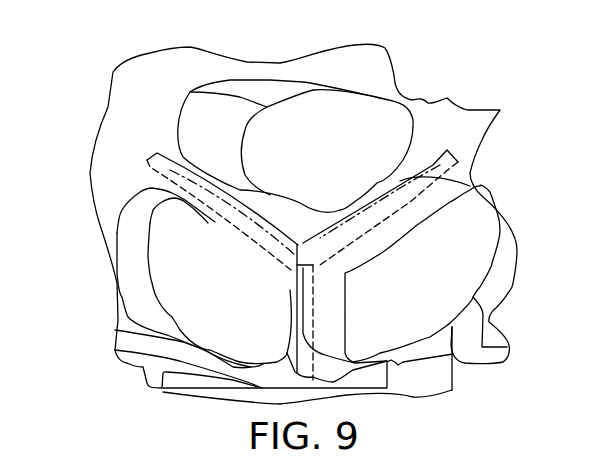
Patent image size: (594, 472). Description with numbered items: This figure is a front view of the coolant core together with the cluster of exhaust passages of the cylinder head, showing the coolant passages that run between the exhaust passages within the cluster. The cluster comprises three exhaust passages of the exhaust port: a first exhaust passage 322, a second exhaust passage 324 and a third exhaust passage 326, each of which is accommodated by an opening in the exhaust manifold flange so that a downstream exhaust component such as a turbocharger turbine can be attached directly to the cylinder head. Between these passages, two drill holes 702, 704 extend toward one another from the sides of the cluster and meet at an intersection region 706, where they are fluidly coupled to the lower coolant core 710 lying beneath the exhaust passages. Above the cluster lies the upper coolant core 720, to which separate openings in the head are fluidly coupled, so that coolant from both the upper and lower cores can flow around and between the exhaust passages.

The first exhaust passage 322 is at (222, 285).
The second exhaust passage 324 is at (346, 159).
The third exhaust passage 326 is at (441, 295).
The drill hole 702 is at (168, 172).
The drill hole 704 is at (441, 167).
The intersection region 706 is at (293, 269).
The lower coolant core 710 is at (418, 383).
The upper coolant core 720 is at (467, 180).